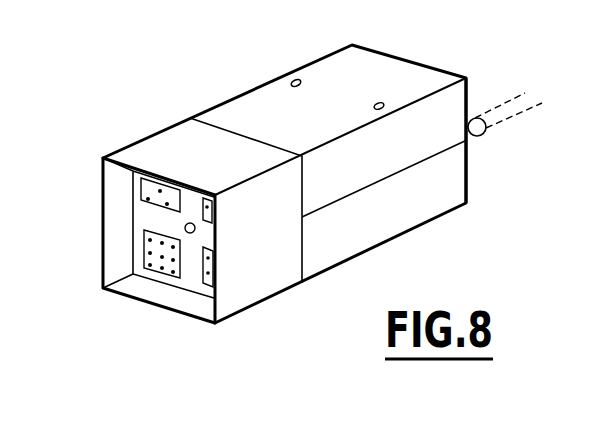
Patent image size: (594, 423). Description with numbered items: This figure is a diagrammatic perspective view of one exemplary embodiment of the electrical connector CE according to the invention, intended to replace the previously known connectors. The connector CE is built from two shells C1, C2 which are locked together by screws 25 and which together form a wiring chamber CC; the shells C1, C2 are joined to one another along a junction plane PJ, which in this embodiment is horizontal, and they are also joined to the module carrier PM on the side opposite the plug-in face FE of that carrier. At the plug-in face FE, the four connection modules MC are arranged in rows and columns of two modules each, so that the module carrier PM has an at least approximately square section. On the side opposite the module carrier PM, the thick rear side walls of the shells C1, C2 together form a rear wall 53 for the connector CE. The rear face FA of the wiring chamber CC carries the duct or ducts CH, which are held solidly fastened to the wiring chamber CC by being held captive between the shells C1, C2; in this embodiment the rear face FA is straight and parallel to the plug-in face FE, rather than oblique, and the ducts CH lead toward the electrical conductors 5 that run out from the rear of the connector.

The electrical connector CE is at (149, 137).
The wiring chamber CC is at (293, 75).
The screws 25 is at (378, 103).
The rear face FA is at (426, 70).
The electrical conductors 5 is at (511, 102).
The ducts CH is at (486, 130).
The rear wall 53 is at (468, 186).
The second shell C2 is at (430, 200).
The junction plane PJ is at (372, 183).
The first shell C1 is at (323, 178).
The module carrier PM is at (248, 293).
The plug-in face FE is at (172, 300).
The connection modules MC is at (160, 203).